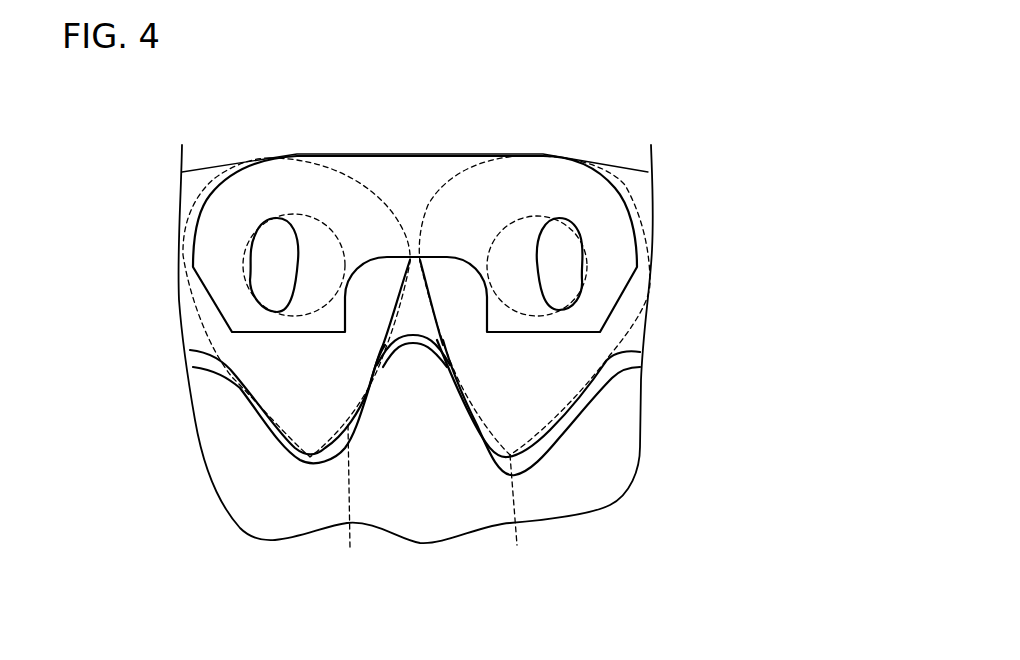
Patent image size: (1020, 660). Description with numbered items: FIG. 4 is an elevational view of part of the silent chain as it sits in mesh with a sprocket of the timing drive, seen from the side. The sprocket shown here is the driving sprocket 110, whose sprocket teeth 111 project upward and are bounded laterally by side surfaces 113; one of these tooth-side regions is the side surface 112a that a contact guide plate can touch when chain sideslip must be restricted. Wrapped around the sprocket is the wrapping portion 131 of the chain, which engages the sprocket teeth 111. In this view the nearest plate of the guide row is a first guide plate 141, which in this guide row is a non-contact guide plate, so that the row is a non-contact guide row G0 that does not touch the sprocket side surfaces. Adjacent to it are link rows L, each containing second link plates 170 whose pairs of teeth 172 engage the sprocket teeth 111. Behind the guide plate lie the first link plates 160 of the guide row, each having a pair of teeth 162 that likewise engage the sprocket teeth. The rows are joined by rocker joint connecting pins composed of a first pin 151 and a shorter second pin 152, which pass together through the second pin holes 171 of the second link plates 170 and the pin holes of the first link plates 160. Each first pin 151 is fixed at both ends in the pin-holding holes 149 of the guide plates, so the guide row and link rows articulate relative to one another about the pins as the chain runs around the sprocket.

The driving sprocket 110 is at (328, 463).
The sprocket teeth 111 is at (560, 438).
The side surface 112a is at (556, 506).
The side surface of sprocket teeth 113 is at (612, 410).
The wrapping portion 131 is at (607, 72).
The first guide plate 141 is at (423, 175).
The pin-holding holes 149 is at (287, 233).
The first pin 151 is at (275, 293).
The second pin 152 is at (523, 314).
The first link plate 160 is at (415, 320).
The teeth 162 is at (434, 501).
The second link plate 170 is at (200, 340).
The second pin holes 171 is at (313, 350).
The teeth 172 is at (490, 385).
The non-contact guide row G0 is at (376, 146).
The link row L is at (204, 150).